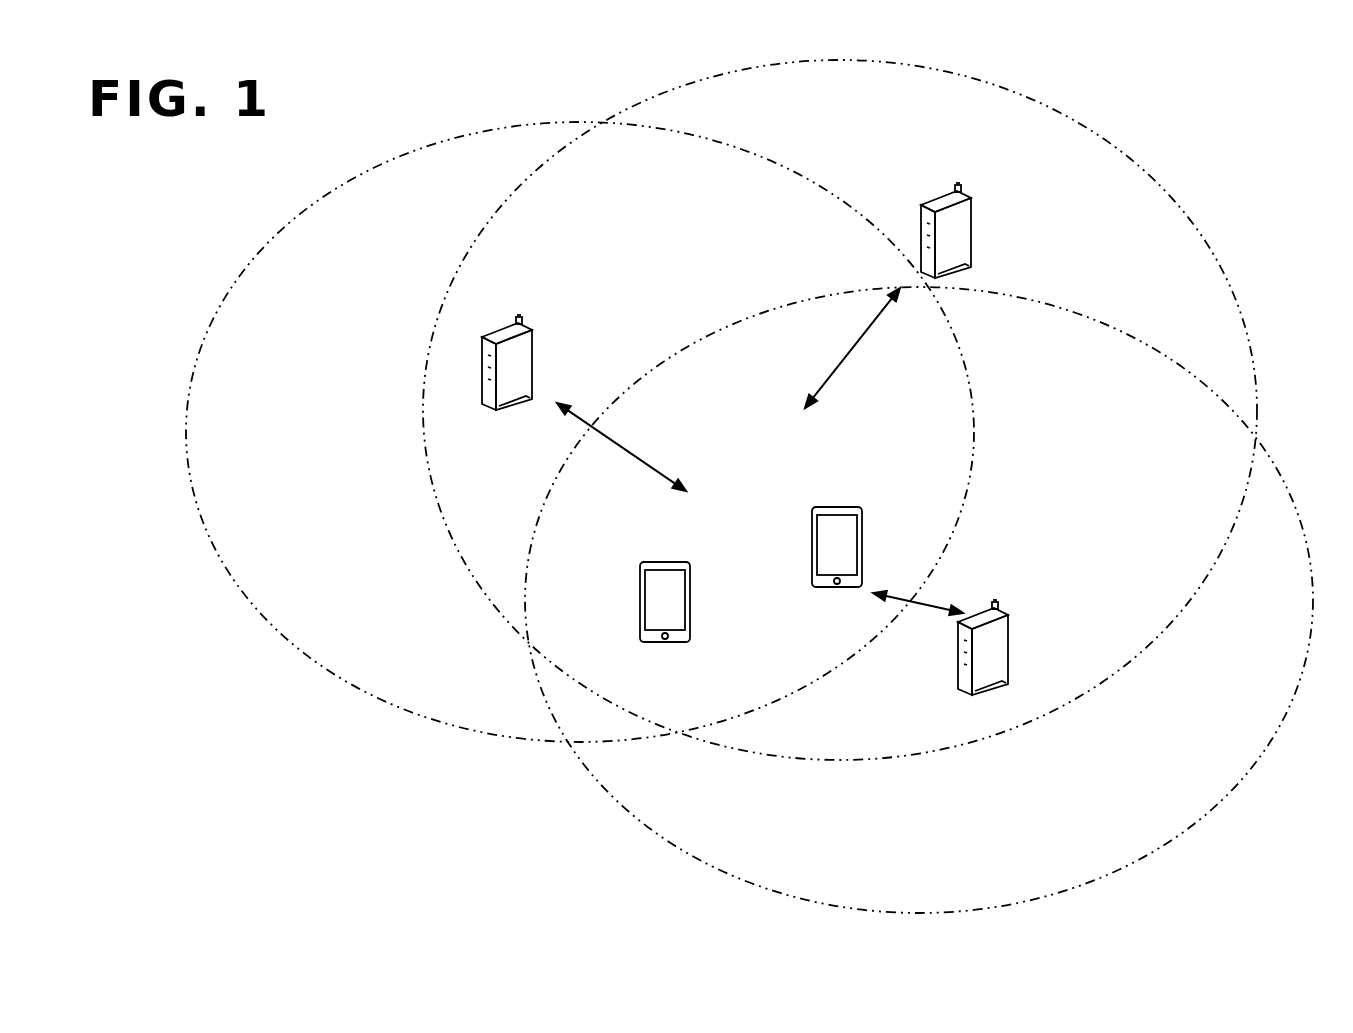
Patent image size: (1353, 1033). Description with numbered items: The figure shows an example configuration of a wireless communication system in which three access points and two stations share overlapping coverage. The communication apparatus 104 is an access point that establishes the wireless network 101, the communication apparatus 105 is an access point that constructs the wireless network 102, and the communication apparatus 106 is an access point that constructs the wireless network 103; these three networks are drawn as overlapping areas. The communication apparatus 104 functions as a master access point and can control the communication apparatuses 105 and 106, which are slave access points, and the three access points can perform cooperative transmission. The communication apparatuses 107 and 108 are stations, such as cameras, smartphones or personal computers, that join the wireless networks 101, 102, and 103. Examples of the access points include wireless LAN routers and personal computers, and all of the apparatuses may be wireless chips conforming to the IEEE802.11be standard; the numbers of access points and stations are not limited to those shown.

The wireless network 101 is at (1222, 800).
The wireless network 102 is at (256, 618).
The wireless network 103 is at (1212, 245).
The communication apparatus 104 is at (1010, 632).
The communication apparatus 105 is at (532, 345).
The communication apparatus 106 is at (972, 210).
The communication apparatus 107 is at (640, 600).
The communication apparatus 108 is at (840, 507).